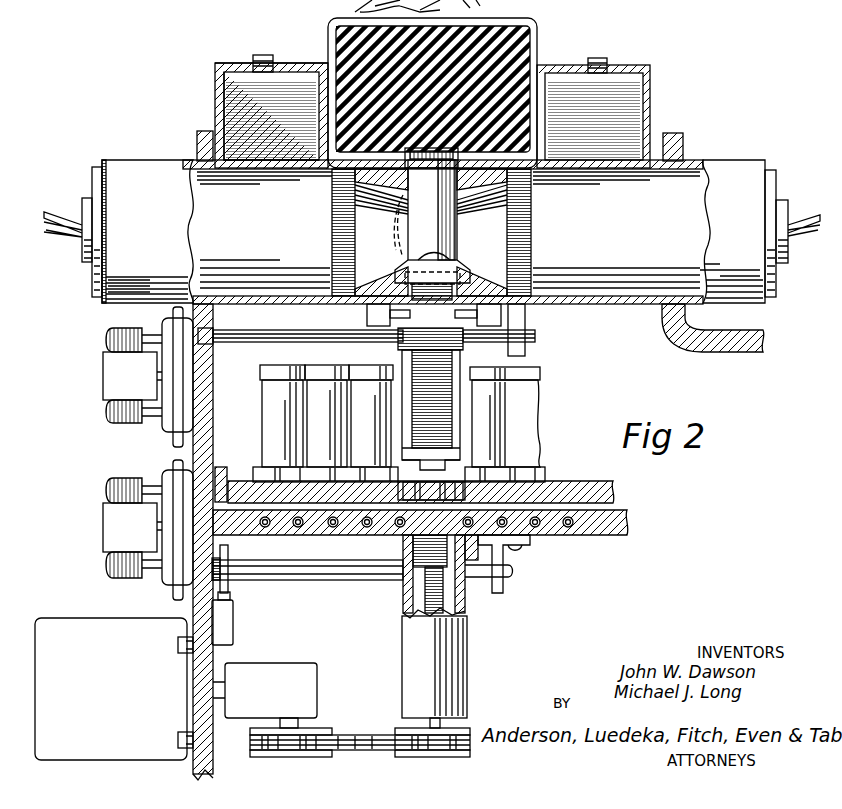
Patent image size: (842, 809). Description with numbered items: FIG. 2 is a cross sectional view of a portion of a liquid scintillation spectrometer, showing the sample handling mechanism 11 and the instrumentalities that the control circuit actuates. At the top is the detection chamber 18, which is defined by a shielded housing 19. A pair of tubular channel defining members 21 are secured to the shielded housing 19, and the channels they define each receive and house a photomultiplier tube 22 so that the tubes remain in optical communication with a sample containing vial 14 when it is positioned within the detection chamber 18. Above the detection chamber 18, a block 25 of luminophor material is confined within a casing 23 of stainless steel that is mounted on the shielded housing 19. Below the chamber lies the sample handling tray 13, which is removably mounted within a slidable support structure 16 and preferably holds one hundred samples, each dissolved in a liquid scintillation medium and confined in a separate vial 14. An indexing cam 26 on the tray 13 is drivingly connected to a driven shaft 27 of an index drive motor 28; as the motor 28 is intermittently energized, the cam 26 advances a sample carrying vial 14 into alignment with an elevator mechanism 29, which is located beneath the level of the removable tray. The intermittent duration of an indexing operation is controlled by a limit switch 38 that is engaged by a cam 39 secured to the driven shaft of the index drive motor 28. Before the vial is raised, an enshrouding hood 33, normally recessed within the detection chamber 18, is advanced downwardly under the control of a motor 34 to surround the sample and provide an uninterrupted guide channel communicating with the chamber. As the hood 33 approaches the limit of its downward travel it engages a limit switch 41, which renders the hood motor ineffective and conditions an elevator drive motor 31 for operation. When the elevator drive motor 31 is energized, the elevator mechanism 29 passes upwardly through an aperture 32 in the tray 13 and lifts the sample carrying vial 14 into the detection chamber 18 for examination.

The sample handling mechanism 11 is at (600, 383).
The sample handling tray 13 is at (608, 492).
The vial 14 is at (528, 403).
The slidable support structure 16 is at (221, 470).
The detection chamber 18 is at (406, 183).
The shielded housing 19 is at (474, 183).
The tubular channel defining member 21 is at (120, 165).
The photomultiplier tube 22 is at (82, 205).
The casing 23 is at (328, 32).
The block of luminophor material 25 is at (510, 52).
The indexing cam 26 is at (455, 442).
The driven shaft 27 is at (478, 578).
The index drive motor 28 is at (103, 526).
The elevator mechanism 29 is at (468, 690).
The elevator drive motor 31 is at (50, 635).
The aperture 32 is at (405, 518).
The enshrouding hood 33 is at (475, 360).
The hood motor 34 is at (103, 378).
The limit switch 38 is at (232, 630).
The cam 39 is at (228, 588).
The limit switch 41 is at (367, 316).